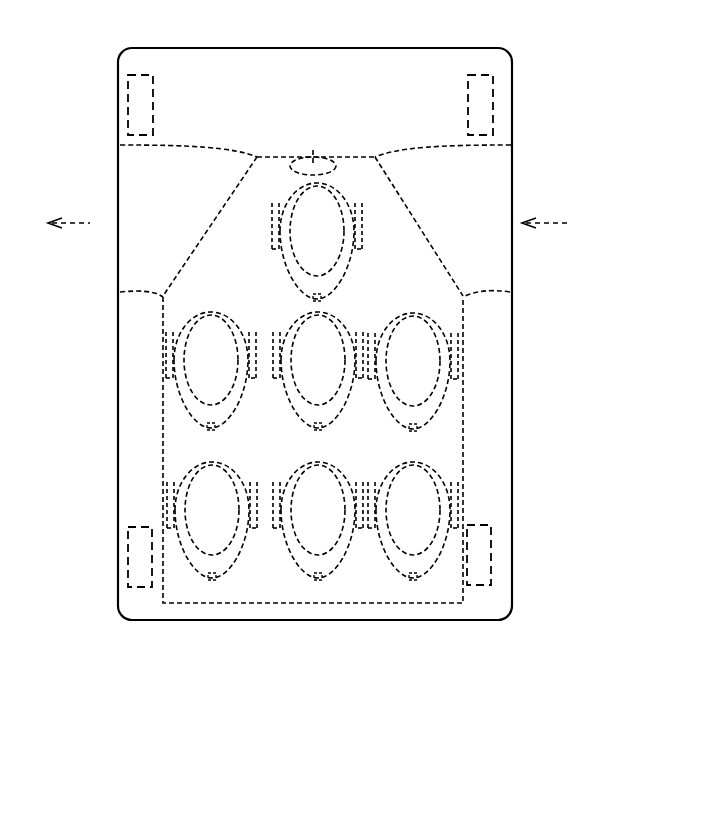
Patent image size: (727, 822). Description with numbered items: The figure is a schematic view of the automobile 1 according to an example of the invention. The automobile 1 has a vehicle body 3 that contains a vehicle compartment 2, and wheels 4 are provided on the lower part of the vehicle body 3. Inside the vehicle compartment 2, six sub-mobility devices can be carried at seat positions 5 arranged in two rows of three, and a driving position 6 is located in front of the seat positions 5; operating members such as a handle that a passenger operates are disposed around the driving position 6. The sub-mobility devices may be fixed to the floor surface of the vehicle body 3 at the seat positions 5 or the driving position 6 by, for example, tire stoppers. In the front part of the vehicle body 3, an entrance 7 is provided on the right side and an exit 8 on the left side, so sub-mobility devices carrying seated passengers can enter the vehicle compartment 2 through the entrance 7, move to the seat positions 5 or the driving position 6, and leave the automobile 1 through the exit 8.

The automobile 1 is at (107, 48).
The vehicle compartment 2 is at (455, 405).
The vehicle body 3 is at (407, 60).
The wheels 4 is at (494, 108).
The seat positions 5 is at (195, 353).
The driving position 6 is at (330, 220).
The entrance 7 is at (442, 260).
The exit 8 is at (185, 263).